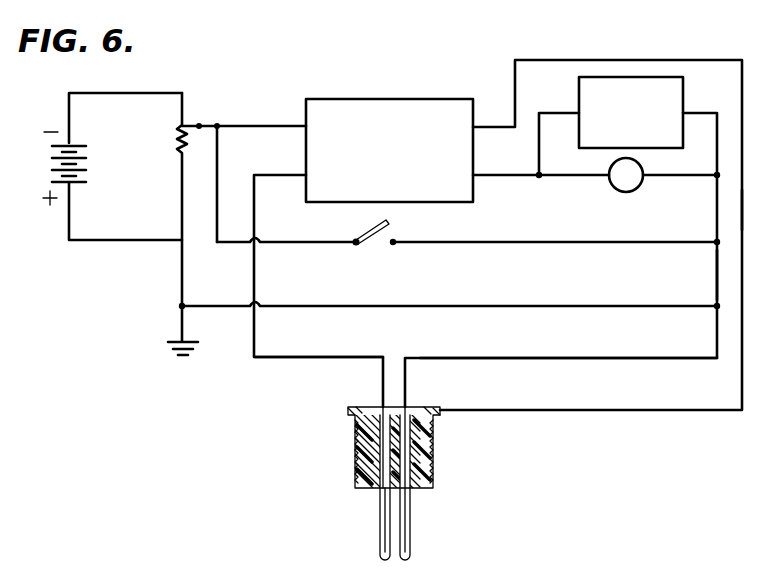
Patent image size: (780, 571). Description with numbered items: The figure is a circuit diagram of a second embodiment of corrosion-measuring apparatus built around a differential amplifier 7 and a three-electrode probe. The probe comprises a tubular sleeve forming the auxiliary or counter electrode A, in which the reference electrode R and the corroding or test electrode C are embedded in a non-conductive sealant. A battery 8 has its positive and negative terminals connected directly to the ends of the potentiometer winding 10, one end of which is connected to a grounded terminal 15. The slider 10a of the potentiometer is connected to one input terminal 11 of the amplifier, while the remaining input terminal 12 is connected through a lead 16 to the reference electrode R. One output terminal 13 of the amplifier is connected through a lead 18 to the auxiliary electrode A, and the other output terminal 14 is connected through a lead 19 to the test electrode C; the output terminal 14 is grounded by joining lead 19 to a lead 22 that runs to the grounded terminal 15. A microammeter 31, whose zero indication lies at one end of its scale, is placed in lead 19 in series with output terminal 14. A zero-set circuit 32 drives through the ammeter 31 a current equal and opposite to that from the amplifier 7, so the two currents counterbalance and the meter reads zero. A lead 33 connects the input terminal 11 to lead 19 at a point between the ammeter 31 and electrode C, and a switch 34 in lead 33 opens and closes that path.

The differential amplifier 7 is at (391, 100).
The battery 8 is at (50, 162).
The potentiometer winding 10 is at (176, 146).
The slider 10a is at (205, 124).
The input terminal 11 is at (304, 126).
The input terminal 12 is at (304, 175).
The output terminal 13 is at (476, 127).
The output terminal 14 is at (476, 177).
The terminal 15 is at (164, 300).
The lead 16 is at (328, 356).
The lead 18 is at (740, 210).
The lead 19 is at (714, 280).
The lead 22 is at (575, 308).
The microammeter 31 is at (626, 192).
The zero-set circuit 32 is at (628, 78).
The lead 33 is at (560, 243).
The switch 34 is at (370, 240).
The auxiliary electrode A is at (430, 468).
The reference electrode R is at (380, 541).
The corroding electrode C is at (410, 536).